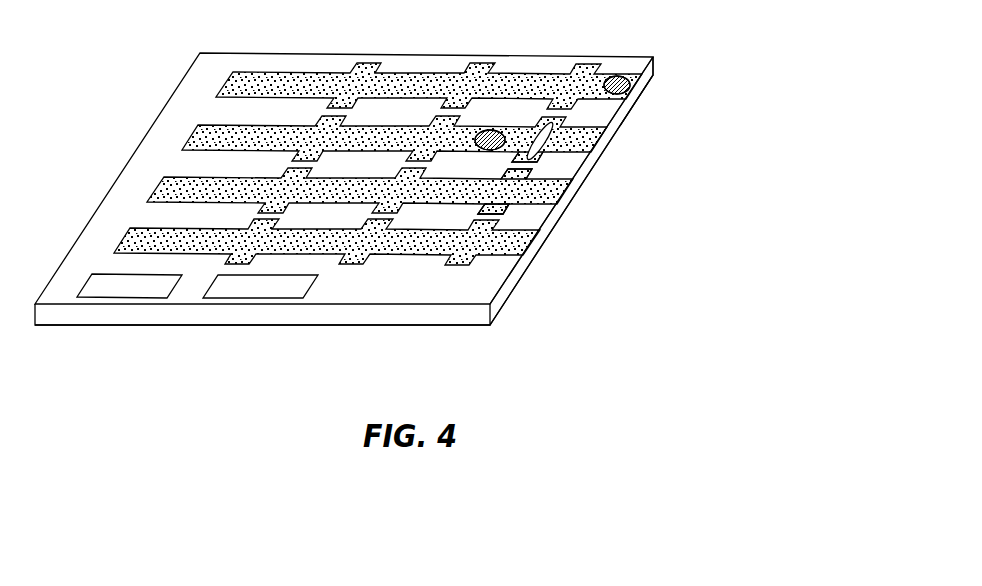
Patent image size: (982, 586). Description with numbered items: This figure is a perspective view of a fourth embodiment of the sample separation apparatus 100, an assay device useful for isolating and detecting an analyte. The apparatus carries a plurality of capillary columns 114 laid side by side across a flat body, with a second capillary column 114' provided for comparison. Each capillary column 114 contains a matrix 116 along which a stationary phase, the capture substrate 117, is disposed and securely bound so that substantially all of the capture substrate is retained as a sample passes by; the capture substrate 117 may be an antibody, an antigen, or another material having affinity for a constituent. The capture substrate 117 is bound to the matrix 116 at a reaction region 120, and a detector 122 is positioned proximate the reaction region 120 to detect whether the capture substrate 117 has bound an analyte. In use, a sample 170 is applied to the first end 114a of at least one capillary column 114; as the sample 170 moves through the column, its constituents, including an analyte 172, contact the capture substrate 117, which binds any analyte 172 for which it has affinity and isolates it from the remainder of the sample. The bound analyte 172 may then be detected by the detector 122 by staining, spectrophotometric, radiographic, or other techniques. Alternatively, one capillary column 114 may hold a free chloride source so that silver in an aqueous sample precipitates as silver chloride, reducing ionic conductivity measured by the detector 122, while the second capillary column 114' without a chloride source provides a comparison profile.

The sample separation apparatus 100 is at (572, 277).
The capillary column 114 is at (357, 200).
The second capillary column 114' is at (592, 180).
The first end 114a is at (637, 103).
The matrix 116 is at (548, 198).
The capture substrate 117 is at (508, 188).
The reaction region 120 is at (505, 200).
The detector 122 is at (524, 165).
The sample 170 is at (504, 130).
The analyte 172 is at (556, 119).